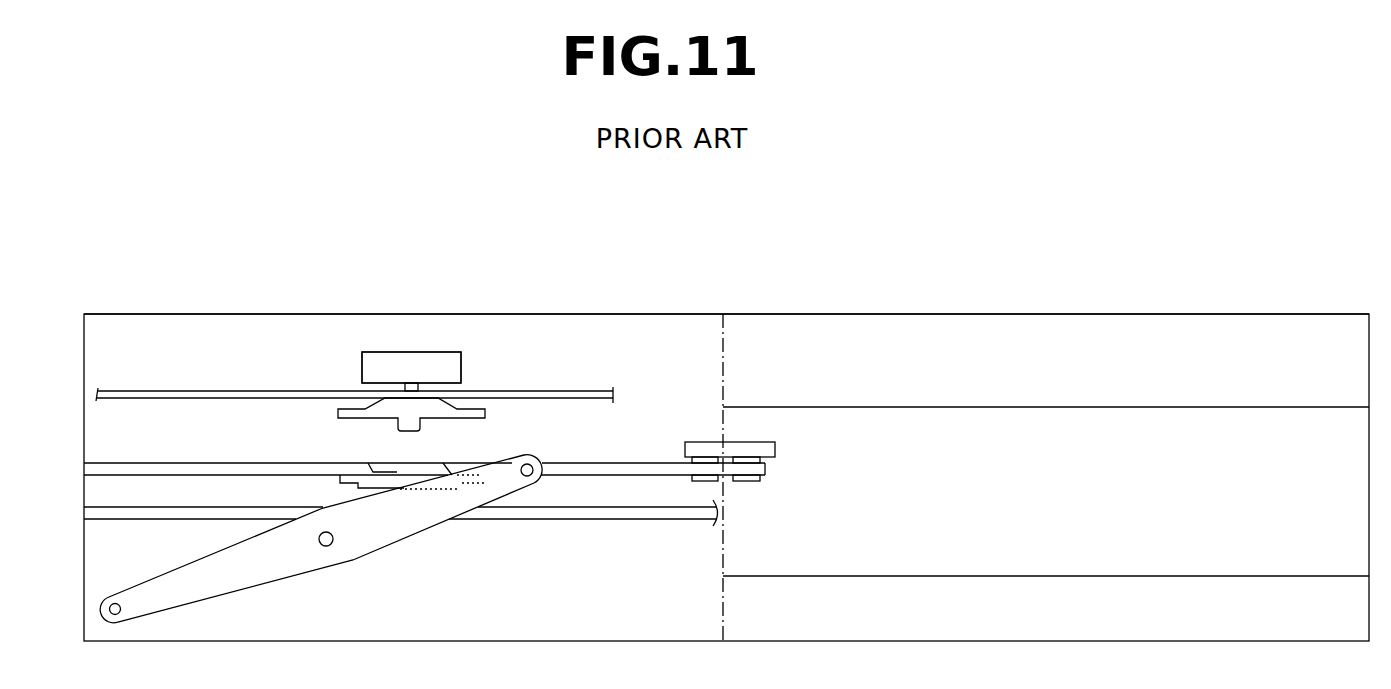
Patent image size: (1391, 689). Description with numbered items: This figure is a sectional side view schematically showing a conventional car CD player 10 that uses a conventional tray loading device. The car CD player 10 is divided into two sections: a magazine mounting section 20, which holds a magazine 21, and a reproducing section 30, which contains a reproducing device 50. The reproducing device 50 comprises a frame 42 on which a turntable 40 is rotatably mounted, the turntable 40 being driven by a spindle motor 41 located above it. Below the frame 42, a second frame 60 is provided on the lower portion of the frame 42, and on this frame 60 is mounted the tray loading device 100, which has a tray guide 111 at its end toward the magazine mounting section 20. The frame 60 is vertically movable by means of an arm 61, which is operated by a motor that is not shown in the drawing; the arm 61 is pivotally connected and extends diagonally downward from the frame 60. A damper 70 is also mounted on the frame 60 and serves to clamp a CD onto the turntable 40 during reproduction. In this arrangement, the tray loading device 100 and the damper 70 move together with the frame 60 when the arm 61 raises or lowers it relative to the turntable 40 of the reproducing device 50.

The car CD player 10 is at (768, 268).
The magazine mounting section 20 is at (985, 314).
The magazine 21 is at (967, 407).
The reproducing section 30 is at (376, 314).
The turntable 40 is at (340, 415).
The spindle motor 41 is at (457, 372).
The frame 42 is at (165, 391).
The reproducing device 50 is at (320, 368).
The frame 60 is at (152, 512).
The arm 61 is at (283, 574).
The damper 70 is at (378, 468).
The tray loading device 100 is at (604, 443).
The tray guide 111 is at (770, 447).